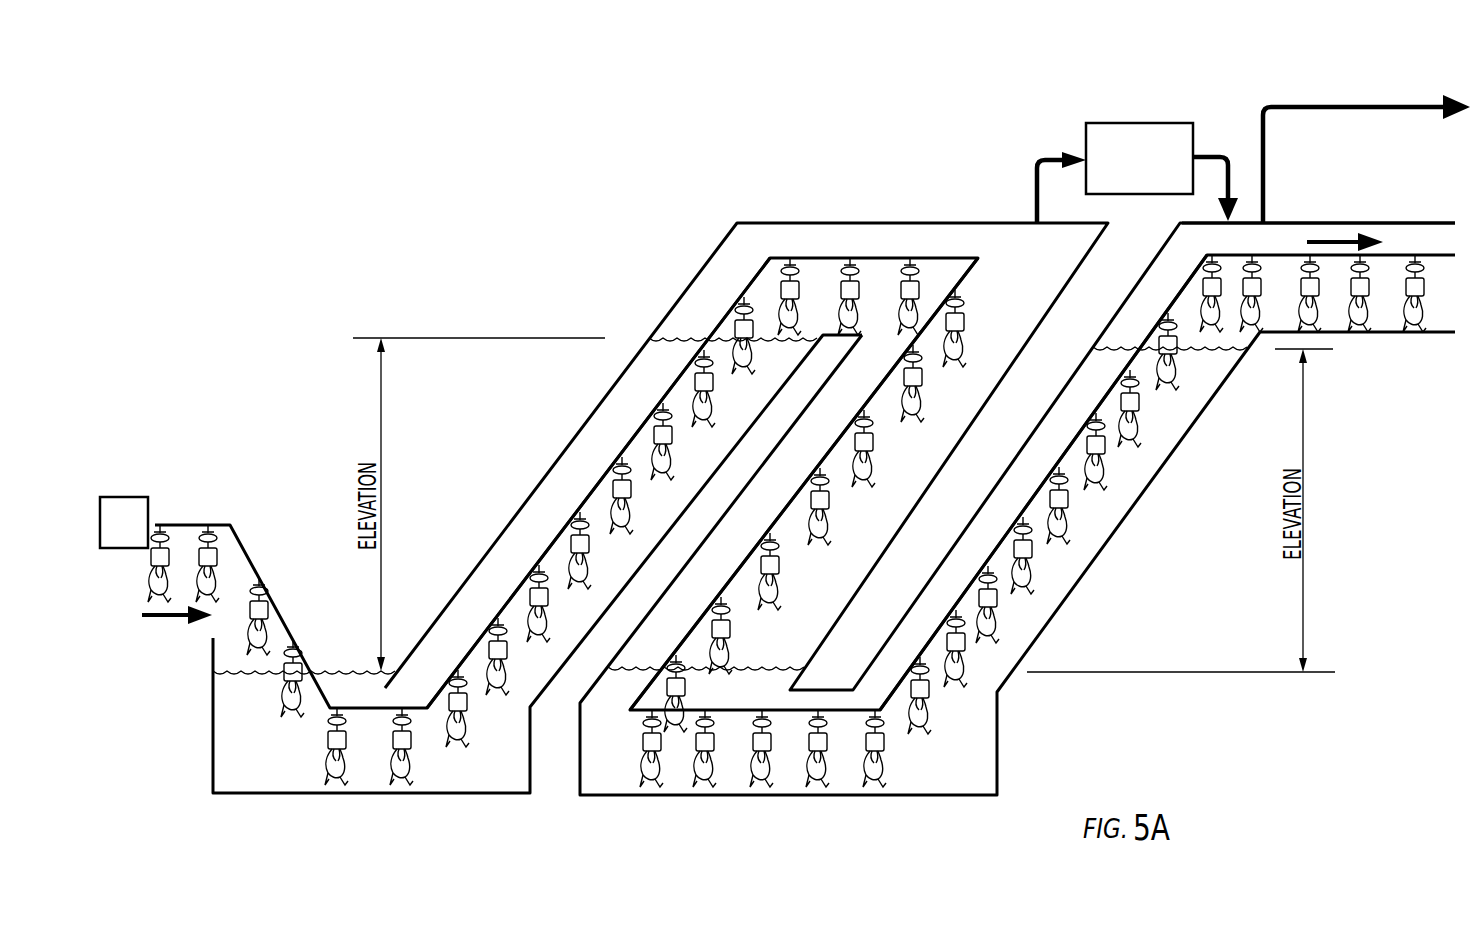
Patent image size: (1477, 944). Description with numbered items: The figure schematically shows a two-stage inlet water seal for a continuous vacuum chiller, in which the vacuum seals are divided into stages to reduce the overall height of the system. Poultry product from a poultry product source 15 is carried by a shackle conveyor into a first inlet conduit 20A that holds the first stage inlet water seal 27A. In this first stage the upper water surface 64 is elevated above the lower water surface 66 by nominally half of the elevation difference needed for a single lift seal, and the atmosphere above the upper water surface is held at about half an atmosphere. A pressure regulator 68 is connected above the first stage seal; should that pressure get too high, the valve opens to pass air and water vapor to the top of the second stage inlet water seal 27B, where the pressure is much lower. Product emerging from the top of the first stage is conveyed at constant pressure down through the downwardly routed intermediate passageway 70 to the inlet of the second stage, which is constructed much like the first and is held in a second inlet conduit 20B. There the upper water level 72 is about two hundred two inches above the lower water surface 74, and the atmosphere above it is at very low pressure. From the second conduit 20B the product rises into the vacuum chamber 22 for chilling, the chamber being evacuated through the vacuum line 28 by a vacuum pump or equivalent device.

The poultry product source 15 is at (135, 535).
The pressure regulator 68 is at (1151, 170).
The vacuum line 28 is at (1355, 100).
The vacuum chamber 22 is at (1364, 196).
The intermediate passageway 70 is at (815, 420).
The upper water surface 64 is at (680, 326).
The lower water surface 66 is at (355, 660).
The lower water surface 74 is at (753, 655).
The upper water level 72 is at (1217, 362).
The first stage inlet water seal 27A is at (597, 430).
The second stage inlet water seal 27B is at (1090, 530).
The first inlet conduit 20A is at (585, 640).
The second inlet conduit 20B is at (1063, 602).